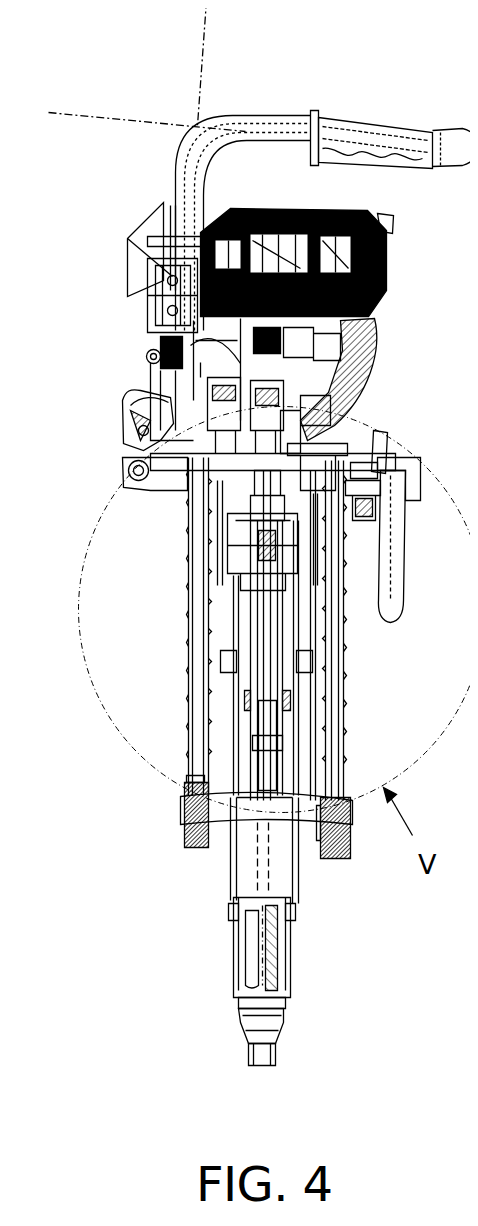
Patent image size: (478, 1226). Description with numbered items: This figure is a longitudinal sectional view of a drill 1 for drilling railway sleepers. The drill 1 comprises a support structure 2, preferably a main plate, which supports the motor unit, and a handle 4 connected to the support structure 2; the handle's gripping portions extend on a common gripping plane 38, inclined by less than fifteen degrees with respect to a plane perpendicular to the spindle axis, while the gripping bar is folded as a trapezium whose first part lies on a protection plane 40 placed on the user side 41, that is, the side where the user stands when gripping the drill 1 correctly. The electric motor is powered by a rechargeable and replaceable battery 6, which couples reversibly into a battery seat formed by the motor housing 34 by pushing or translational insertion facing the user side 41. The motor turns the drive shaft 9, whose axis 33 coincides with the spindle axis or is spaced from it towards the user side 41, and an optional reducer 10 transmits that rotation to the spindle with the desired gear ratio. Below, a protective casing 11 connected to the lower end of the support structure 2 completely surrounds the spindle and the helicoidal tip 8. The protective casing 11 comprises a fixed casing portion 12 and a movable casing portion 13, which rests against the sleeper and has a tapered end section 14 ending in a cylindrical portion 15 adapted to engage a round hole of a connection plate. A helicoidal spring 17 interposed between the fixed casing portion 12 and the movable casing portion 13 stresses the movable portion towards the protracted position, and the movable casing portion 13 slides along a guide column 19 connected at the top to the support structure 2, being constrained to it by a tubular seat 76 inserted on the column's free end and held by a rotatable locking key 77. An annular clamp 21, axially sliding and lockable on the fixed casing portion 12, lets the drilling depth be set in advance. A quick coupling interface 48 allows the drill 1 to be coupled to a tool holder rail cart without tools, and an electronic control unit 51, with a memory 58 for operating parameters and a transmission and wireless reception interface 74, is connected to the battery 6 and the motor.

The drill 1 is at (116, 397).
The support structure 2 is at (477, 272).
The handle 4 is at (200, 130).
The battery 6 is at (272, 207).
The helicoidal tip 8 is at (297, 880).
The drive shaft 9 is at (180, 347).
The reducer 10 is at (258, 503).
The protective casing 11 is at (215, 893).
The fixed casing portion 12 is at (297, 730).
The movable casing portion 13 is at (235, 868).
The end section 14 is at (283, 1040).
The cylindrical portion 15 is at (275, 1062).
The helicoidal spring 17 is at (456, 925).
The guide column 19 is at (461, 799).
The annular clamp 21 is at (275, 610).
The axis of the drive shaft 33 is at (160, 328).
The housing 34 is at (118, 400).
The gripping plane 38 is at (73, 112).
The protection plane 40 is at (205, 72).
The user side 41 is at (46, 361).
The quick coupling interface 48 is at (398, 580).
The electronic control unit 51 is at (121, 237).
The memory 58 is at (152, 257).
The transmission and wireless reception interface 74 is at (121, 237).
The tubular seat 76 is at (183, 798).
The locking key 77 is at (193, 838).